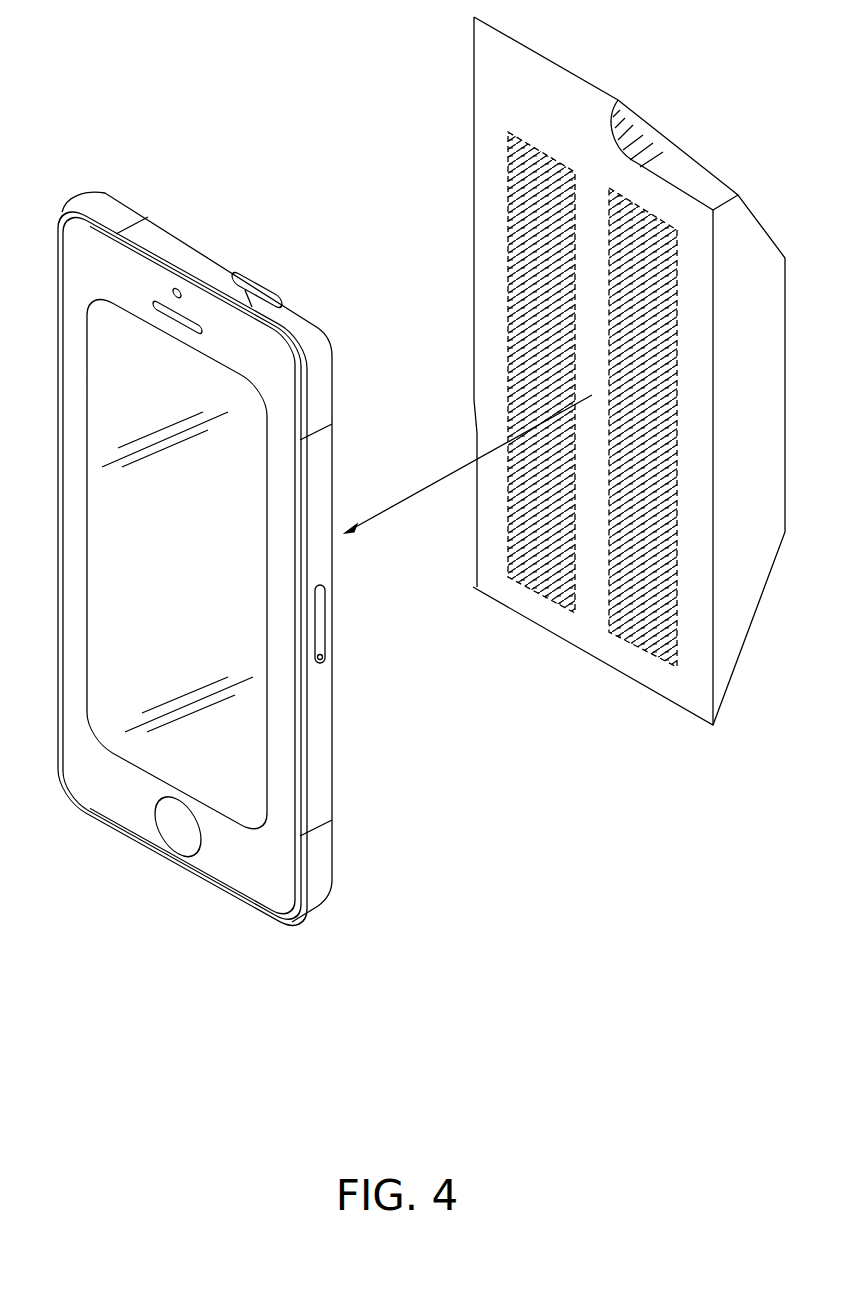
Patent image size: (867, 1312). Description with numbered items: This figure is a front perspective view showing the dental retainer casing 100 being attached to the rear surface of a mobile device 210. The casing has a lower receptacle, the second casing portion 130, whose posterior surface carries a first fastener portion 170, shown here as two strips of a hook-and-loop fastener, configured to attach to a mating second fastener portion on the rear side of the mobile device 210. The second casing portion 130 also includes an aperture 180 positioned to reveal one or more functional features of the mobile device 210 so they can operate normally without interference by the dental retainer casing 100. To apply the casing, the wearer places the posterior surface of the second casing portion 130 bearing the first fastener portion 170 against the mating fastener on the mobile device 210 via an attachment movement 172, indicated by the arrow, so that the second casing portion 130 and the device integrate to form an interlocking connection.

The dental retainer casing 100 is at (565, 371).
The second casing portion 130 is at (473, 104).
The first fastener portion 170 is at (608, 333).
The attachment movement 172 is at (402, 503).
The aperture 180 is at (690, 150).
The mobile device 210 is at (334, 748).